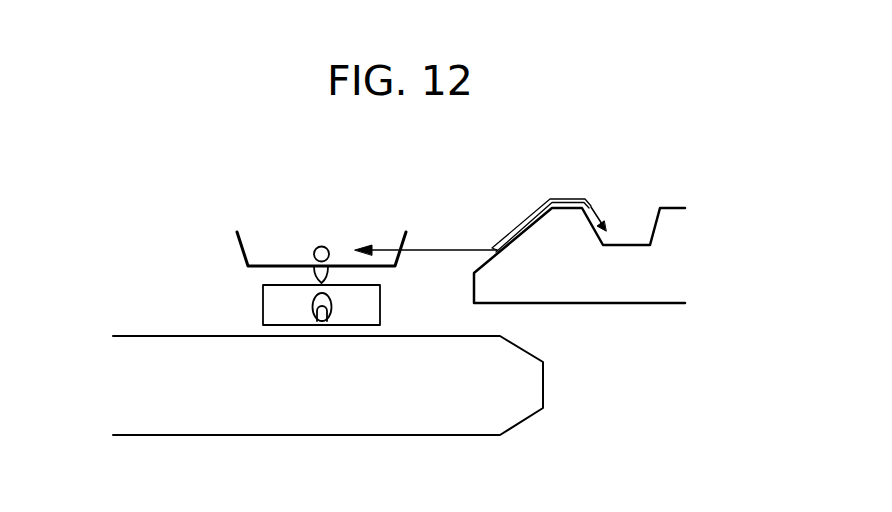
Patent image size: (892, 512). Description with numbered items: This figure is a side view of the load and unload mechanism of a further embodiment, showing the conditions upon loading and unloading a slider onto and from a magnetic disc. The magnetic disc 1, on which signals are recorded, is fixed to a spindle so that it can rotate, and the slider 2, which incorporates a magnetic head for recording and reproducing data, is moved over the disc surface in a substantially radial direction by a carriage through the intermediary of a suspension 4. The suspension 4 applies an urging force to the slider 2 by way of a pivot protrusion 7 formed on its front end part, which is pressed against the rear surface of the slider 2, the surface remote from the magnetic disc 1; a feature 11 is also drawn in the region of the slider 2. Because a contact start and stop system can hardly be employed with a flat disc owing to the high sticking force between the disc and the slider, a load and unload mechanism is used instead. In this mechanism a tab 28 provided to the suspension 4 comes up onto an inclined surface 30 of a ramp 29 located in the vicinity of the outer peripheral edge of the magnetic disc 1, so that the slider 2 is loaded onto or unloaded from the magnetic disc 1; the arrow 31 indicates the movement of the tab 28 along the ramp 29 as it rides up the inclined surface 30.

The magnetic disc 1 is at (229, 395).
The slider 2 is at (352, 305).
The suspension 4 is at (280, 265).
The pivot protrusion 7 is at (315, 272).
The hole 11 is at (323, 330).
The tab 28 is at (326, 249).
The ramp 29 is at (560, 285).
The inclined surface 30 is at (516, 229).
The fold portion 31 is at (568, 200).